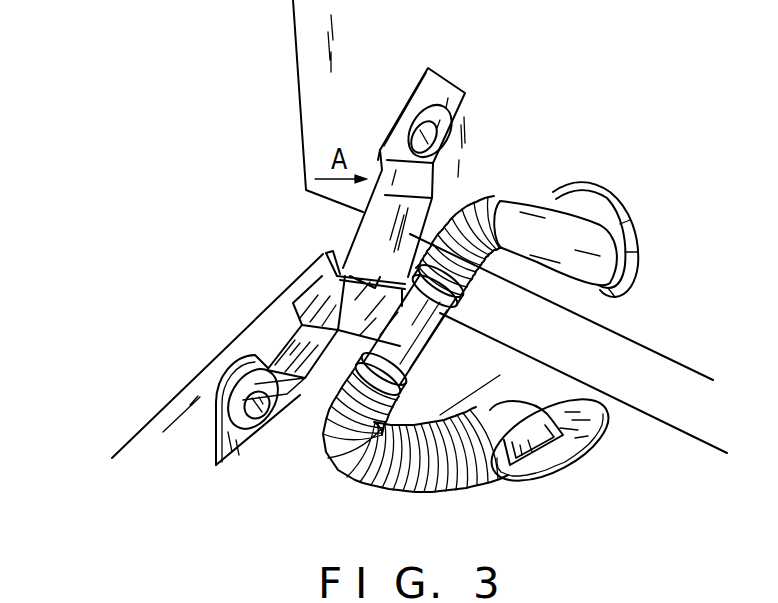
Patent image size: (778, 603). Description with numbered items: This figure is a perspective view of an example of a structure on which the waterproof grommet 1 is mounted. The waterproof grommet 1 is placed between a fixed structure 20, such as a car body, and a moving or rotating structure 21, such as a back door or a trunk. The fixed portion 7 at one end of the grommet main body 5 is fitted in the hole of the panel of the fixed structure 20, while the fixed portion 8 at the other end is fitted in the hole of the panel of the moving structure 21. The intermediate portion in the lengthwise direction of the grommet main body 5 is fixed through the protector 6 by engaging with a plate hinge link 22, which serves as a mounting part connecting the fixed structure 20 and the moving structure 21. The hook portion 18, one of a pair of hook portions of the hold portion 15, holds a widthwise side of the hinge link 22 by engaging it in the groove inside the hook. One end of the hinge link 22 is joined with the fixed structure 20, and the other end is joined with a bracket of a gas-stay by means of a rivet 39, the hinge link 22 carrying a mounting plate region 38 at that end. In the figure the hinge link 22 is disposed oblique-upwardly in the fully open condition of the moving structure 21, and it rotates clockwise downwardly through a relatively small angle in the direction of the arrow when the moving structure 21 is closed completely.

The waterproof grommet 1 is at (512, 172).
The grommet main body 5 is at (361, 488).
The protector 6 is at (430, 340).
The fixed portion 7 is at (587, 432).
The fixed portion 8 is at (600, 193).
The hold portion 15 is at (348, 260).
The hook portion 18 is at (302, 275).
The fixed structure 20 is at (182, 388).
The moving structure 21 is at (298, 82).
The plate hinge link 22 is at (338, 270).
The upper mounting plate with hole 38 is at (430, 90).
The rivet 39 is at (263, 415).